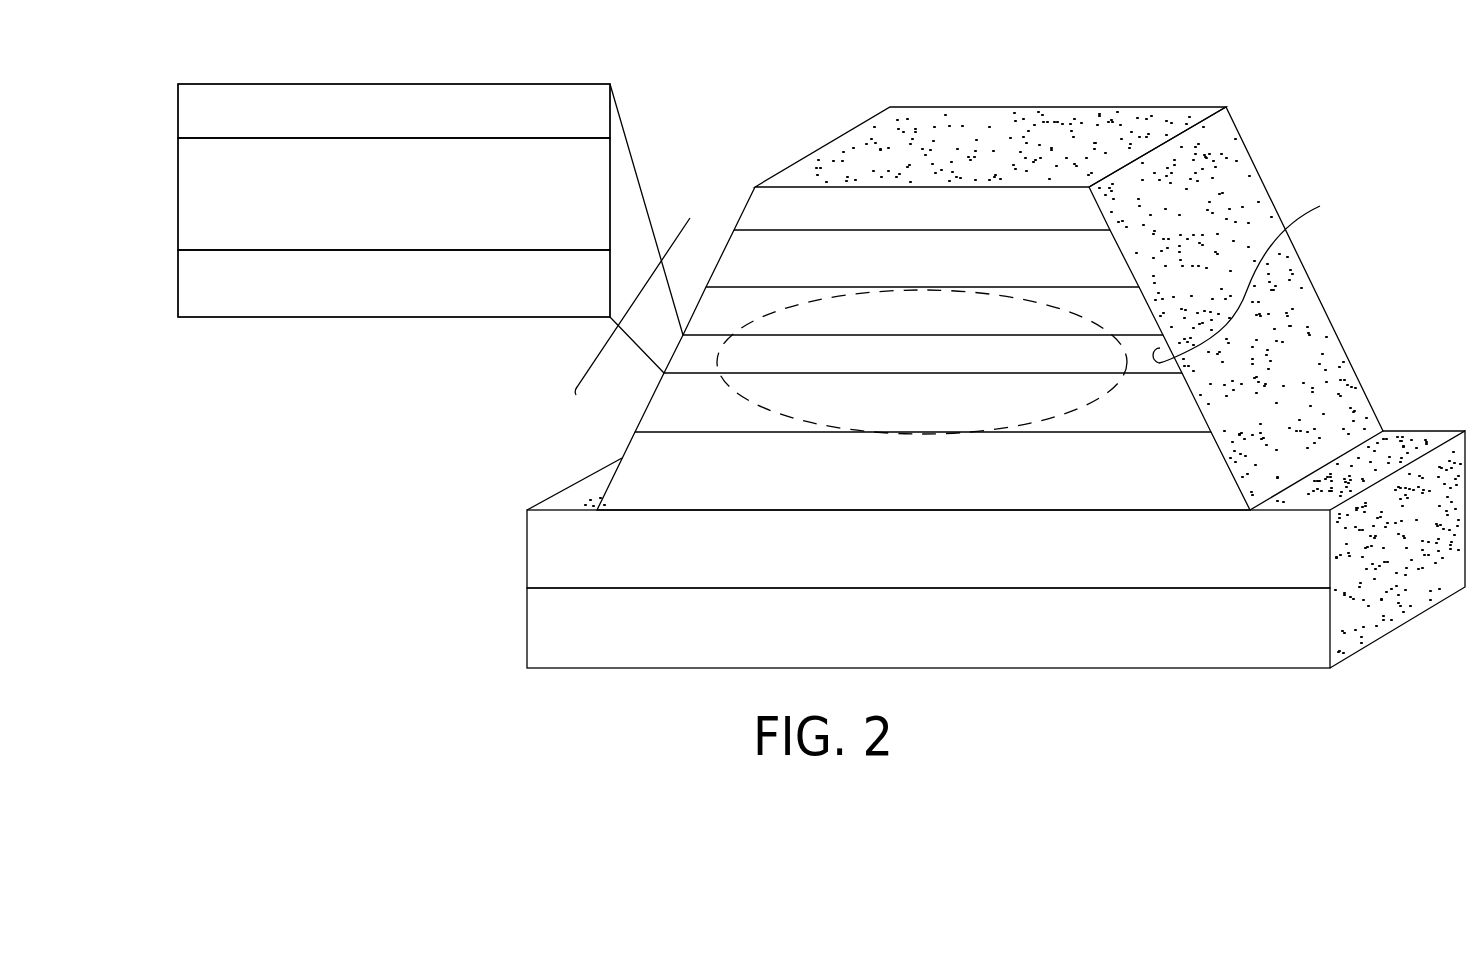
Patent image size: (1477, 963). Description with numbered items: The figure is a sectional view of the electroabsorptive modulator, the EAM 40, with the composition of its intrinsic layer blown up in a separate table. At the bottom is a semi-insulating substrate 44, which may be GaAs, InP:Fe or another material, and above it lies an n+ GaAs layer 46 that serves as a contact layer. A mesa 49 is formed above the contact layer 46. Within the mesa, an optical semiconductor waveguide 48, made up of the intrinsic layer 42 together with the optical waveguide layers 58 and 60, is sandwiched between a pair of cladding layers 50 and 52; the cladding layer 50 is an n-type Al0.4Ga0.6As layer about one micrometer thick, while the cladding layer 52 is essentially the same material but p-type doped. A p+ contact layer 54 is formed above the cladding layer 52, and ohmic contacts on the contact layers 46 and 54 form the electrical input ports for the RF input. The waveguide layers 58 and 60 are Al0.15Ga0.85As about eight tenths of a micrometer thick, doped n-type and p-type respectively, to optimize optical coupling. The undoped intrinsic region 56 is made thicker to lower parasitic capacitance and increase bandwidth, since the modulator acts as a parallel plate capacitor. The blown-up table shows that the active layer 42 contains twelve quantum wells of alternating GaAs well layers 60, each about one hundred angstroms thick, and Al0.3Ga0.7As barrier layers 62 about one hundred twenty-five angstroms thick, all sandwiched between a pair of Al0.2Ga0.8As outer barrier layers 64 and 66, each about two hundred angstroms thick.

The EAM 40 is at (1348, 270).
The intrinsic layer 42 is at (671, 355).
The semi-insulating substrate 44 is at (527, 633).
The n+ layer 46 is at (527, 558).
The optical semiconductor waveguide 48 is at (633, 302).
The mesa 49 is at (1040, 86).
The cladding layer 50 is at (622, 458).
The cladding layer 52 is at (718, 262).
The p+ contact layer 54 is at (740, 217).
The intrinsic region 56 is at (1252, 277).
The optical waveguide layer 58 is at (640, 412).
The well layer 60 is at (698, 302).
The barrier layer 62 is at (178, 178).
The outer barrier layer 64 is at (178, 280).
The outer barrier layer 66 is at (178, 114).